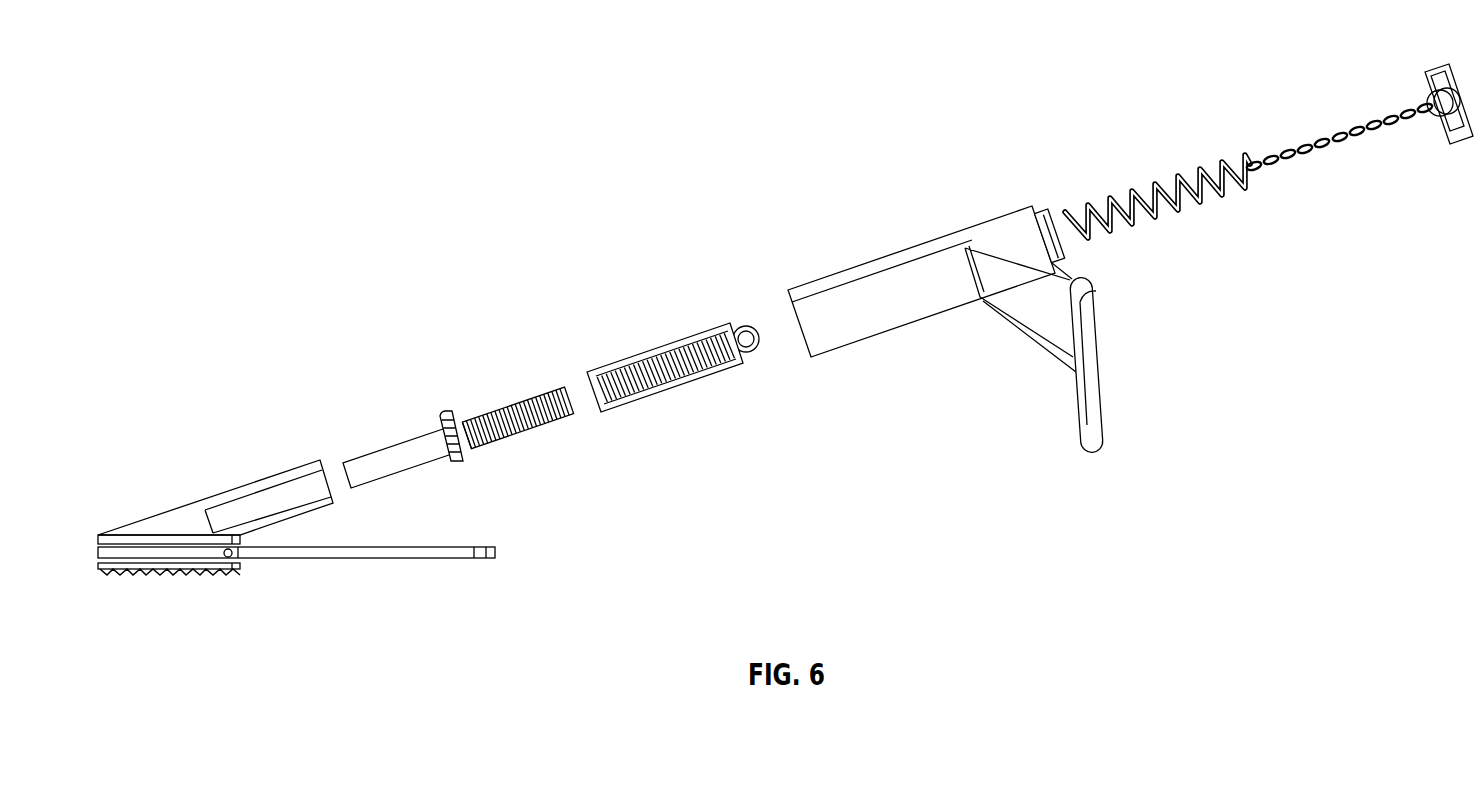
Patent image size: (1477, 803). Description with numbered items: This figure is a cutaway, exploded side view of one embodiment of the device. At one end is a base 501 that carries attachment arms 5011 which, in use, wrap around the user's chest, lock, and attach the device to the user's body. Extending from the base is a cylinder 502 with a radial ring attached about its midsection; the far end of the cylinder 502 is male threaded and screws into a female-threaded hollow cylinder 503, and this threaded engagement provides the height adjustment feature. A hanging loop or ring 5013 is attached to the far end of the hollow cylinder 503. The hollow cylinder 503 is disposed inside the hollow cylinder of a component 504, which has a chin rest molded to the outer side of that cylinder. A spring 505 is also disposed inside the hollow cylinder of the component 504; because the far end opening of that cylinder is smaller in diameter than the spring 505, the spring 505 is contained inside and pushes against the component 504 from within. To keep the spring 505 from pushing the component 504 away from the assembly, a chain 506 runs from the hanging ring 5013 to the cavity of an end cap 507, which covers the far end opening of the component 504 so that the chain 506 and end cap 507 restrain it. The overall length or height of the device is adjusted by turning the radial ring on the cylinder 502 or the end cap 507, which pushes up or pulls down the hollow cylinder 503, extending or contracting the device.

The base 501 is at (335, 558).
The attachment arms 5011 is at (467, 600).
The cylinder 502 is at (388, 459).
The hollow cylinder 503 is at (663, 388).
The hanging loop or ring 5013 is at (722, 300).
The component 504 is at (877, 267).
The spring 505 is at (1132, 192).
The chain 506 is at (1307, 148).
The end cap 507 is at (1437, 72).